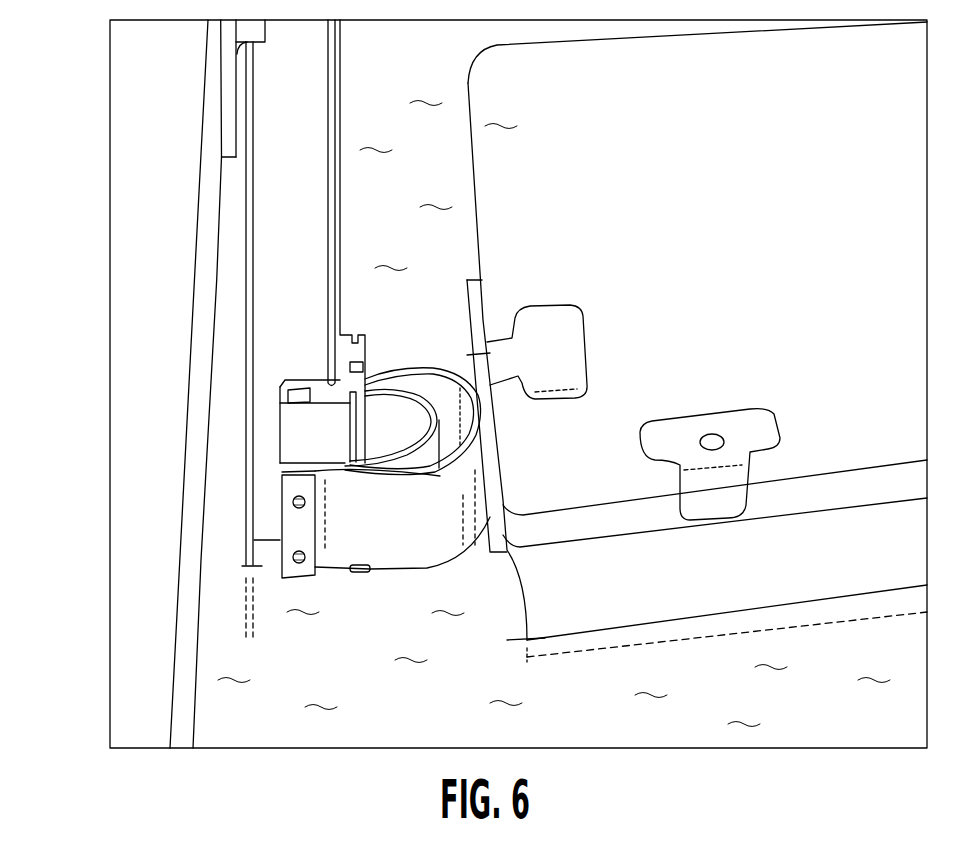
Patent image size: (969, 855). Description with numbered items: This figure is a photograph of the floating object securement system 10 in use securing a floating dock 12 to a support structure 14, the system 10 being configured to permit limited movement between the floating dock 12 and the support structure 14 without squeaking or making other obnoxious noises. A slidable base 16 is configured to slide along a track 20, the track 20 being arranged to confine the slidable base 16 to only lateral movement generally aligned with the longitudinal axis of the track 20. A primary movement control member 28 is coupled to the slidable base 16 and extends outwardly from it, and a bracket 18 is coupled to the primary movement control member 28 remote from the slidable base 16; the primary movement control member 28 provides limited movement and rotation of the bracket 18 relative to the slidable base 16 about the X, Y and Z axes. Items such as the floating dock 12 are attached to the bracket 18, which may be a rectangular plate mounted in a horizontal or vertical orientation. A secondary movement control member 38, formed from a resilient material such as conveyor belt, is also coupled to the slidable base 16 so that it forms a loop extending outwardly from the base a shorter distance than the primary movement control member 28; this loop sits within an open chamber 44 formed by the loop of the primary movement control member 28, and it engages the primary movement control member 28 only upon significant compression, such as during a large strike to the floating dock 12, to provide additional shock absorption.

The floating object securement system 10 is at (157, 471).
The floating dock 12 is at (805, 357).
The support structure 14 is at (195, 259).
The slidable base 16 is at (313, 430).
The bracket 18 is at (483, 380).
The track 20 is at (287, 305).
The primary movement control member 28 is at (465, 352).
The secondary movement control member 38 is at (398, 383).
The open chamber 44 is at (423, 453).